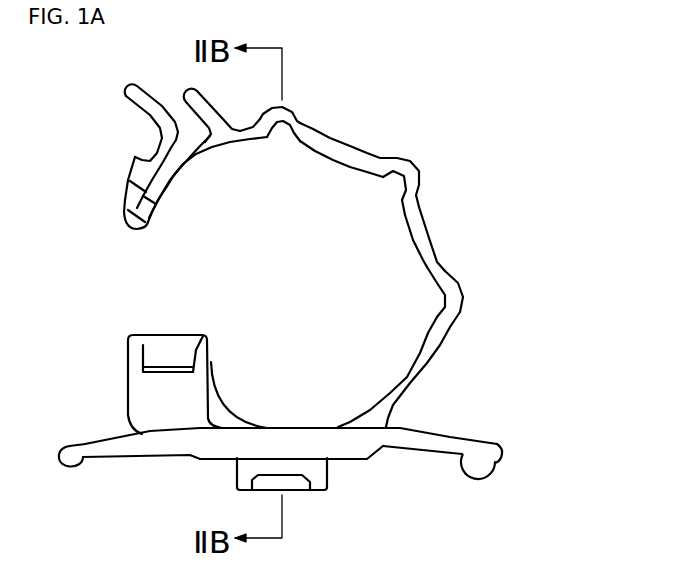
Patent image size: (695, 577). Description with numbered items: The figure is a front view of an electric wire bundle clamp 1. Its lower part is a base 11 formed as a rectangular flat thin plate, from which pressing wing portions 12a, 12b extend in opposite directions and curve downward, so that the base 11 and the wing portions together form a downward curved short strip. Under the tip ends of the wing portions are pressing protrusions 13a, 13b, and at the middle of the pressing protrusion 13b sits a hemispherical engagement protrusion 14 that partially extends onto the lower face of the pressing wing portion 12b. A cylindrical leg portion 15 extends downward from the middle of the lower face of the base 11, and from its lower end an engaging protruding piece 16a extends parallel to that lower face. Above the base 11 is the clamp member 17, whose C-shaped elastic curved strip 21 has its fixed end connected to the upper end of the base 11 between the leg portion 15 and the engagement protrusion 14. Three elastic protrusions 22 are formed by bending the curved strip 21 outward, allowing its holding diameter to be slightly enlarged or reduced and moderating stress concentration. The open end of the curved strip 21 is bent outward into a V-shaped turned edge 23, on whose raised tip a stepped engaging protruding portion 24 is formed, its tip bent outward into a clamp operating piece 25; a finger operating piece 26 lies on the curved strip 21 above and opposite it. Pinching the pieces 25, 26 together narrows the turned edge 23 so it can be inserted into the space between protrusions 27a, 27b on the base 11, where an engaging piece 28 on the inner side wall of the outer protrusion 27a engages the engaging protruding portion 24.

The electric wire bundle clamp 1 is at (417, 107).
The base 11 is at (352, 460).
The pressing wing portion 12a is at (118, 456).
The pressing wing portion 12b is at (418, 447).
The pressing protrusion 13a is at (73, 468).
The pressing protrusion 13b is at (501, 453).
The engagement protrusion 14 is at (480, 479).
The leg portion 15 is at (237, 489).
The engaging protruding piece 16a is at (300, 490).
The clamp member 17 is at (500, 188).
The C-shaped elastic curved strip 21 is at (440, 223).
The elastic protrusions 22 is at (297, 118).
The turned edge 23 is at (123, 208).
The engaging protruding portion 24 is at (135, 157).
The clamp operating piece 25 is at (133, 88).
The finger operating piece 26 is at (192, 92).
The protrusion 27a is at (128, 362).
The protrusion 27b is at (211, 345).
The engaging piece 28 is at (170, 332).